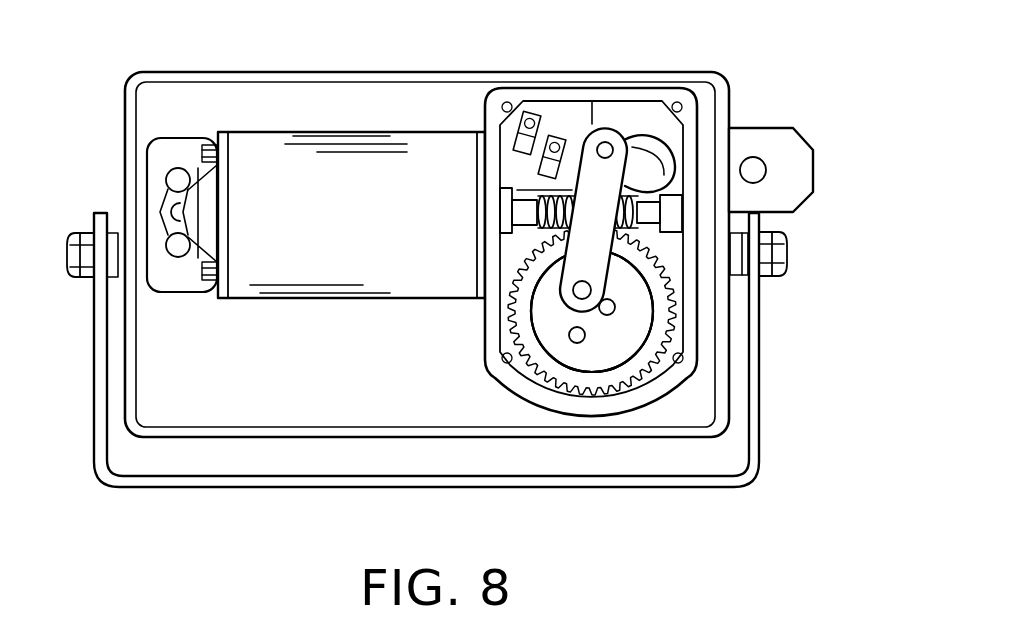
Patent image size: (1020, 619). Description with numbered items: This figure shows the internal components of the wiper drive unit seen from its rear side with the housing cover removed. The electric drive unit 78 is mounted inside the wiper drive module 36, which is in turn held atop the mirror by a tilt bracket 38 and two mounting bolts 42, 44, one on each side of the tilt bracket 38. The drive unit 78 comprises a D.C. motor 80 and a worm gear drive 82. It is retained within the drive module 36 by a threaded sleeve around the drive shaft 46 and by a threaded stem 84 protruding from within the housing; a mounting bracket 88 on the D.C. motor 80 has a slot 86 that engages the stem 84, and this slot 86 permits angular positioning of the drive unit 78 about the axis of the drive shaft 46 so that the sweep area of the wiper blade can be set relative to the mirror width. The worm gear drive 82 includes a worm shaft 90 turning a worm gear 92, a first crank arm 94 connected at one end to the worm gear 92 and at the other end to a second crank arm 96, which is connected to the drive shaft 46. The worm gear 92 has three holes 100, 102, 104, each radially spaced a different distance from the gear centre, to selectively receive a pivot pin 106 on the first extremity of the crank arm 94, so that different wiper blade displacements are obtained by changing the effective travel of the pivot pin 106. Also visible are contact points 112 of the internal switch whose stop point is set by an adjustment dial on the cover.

The wiper drive module 36 is at (272, 72).
The tilt bracket 38 is at (185, 489).
The mounting bolt 42 is at (65, 260).
The mounting bolt 44 is at (788, 243).
The drive shaft 46 is at (630, 157).
The electric drive unit 78 is at (369, 100).
The D.C. motor 80 is at (290, 298).
The worm gear drive 82 is at (485, 344).
The threaded stem 84 is at (162, 212).
The slot 86 is at (175, 185).
The mounting bracket 88 is at (167, 147).
The worm shaft 90 is at (648, 223).
The worm gear 92 is at (662, 311).
The first crank arm 94 is at (583, 177).
The second crank arm 96 is at (633, 158).
The hole 100 is at (585, 342).
The hole 102 is at (613, 313).
The hole 104 is at (657, 348).
The pivot pin 106 is at (757, 494).
The contact points 112 is at (553, 142).